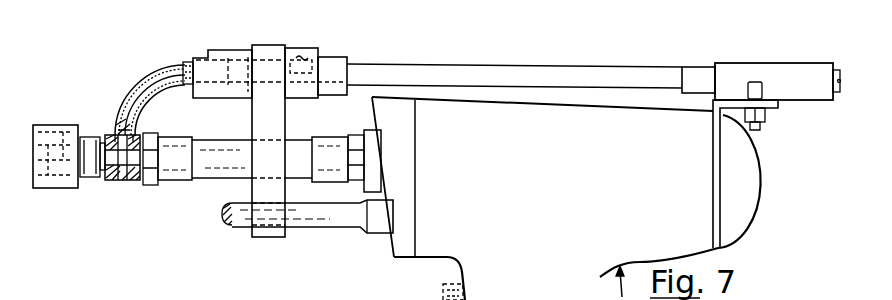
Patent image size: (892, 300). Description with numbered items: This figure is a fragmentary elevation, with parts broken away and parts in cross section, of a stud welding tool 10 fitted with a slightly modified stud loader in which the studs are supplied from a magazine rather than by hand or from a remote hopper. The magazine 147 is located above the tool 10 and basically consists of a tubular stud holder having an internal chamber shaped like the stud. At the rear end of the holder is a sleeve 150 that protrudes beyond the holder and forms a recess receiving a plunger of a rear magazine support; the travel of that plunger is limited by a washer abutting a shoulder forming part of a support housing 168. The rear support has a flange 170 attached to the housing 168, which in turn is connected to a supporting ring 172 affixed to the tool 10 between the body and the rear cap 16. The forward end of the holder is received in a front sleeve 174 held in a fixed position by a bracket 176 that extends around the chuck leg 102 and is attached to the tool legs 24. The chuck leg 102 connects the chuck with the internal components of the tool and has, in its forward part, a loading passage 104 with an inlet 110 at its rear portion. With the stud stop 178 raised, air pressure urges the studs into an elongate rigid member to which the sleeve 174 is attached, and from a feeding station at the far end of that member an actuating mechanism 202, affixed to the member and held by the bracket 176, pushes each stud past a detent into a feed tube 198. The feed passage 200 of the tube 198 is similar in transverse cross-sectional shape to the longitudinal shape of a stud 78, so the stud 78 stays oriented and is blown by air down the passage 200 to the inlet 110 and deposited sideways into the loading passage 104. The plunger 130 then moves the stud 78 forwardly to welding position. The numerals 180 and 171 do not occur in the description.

The stud welding tool 10 is at (385, 250).
The rear cap 16 is at (767, 176).
The supporting ring 172 is at (720, 207).
The magazine 147 is at (501, 67).
The sleeve 150 is at (694, 63).
The support housing 168 is at (780, 63).
The flange 170 is at (780, 104).
The bracket 176 is at (287, 118).
The front sleeve 174 is at (237, 58).
The actuating mechanism 202 is at (300, 48).
The chuck leg 102 is at (232, 136).
The loading passage 104 is at (104, 160).
The plunger 130 is at (113, 166).
The inlet 110 is at (128, 125).
The feed passage 200 is at (153, 74).
The stud 78 is at (119, 116).
The feed tube 198 is at (140, 90).
The tool leg 24 is at (226, 223).
The stud stop 178 is at (296, 299).
The lower component 180 is at (369, 292).
The lower component 171 is at (222, 296).